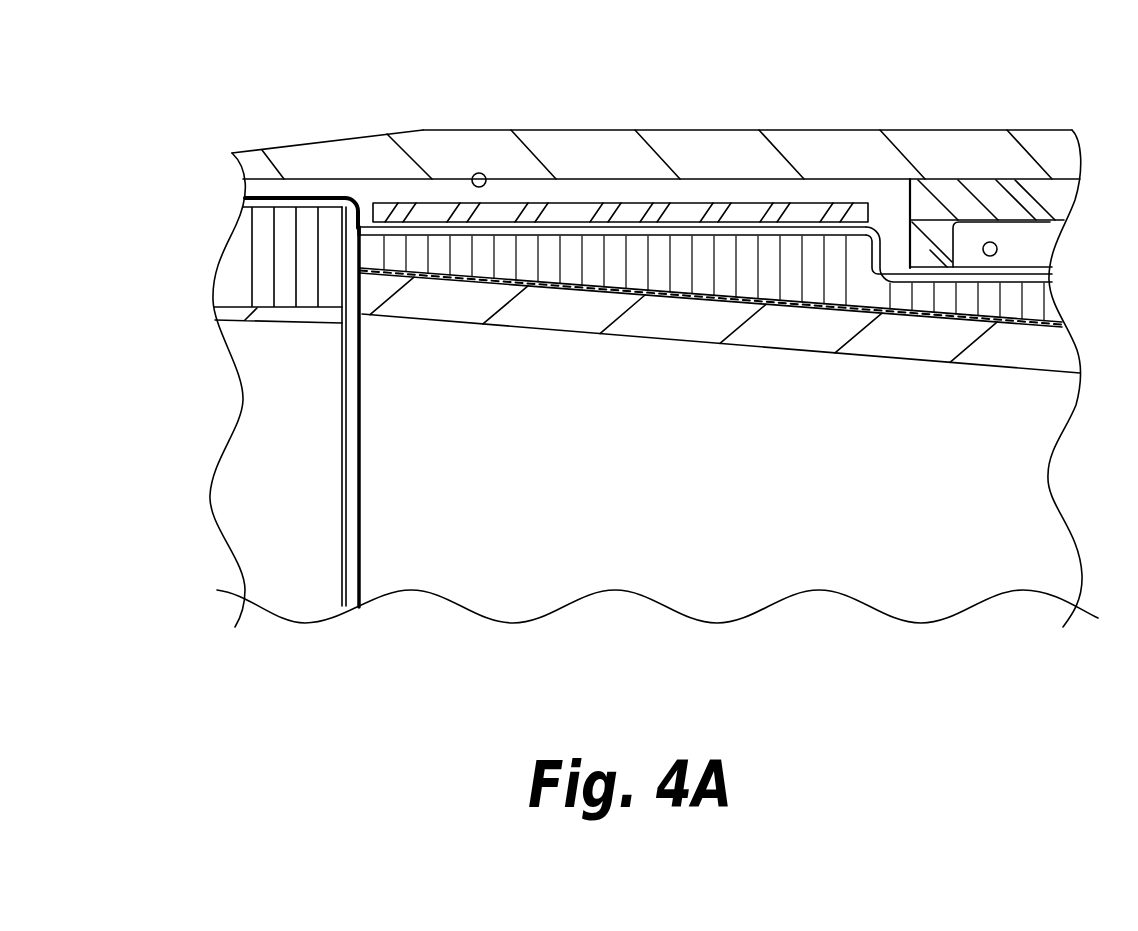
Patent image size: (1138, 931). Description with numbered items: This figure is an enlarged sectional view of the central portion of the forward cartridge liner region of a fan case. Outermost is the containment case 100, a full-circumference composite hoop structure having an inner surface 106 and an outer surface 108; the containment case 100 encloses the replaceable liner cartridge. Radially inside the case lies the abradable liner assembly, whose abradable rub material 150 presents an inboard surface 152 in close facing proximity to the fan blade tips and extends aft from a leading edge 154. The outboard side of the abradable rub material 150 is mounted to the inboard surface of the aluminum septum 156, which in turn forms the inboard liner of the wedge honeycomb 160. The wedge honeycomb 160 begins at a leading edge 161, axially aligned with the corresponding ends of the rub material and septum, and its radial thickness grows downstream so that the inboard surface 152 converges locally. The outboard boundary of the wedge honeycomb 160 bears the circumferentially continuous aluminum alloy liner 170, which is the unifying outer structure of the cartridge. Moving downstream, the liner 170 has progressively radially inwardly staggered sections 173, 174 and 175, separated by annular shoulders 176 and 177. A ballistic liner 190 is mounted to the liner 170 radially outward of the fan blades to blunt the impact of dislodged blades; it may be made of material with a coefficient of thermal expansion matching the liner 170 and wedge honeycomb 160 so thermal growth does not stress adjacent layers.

The containment case 100 is at (742, 140).
The inner surface 106 is at (478, 173).
The outer surface 108 is at (825, 128).
The abradable rub material 150 is at (993, 345).
The inboard surface 152 is at (865, 352).
The leading edge 154 is at (357, 295).
The aluminum septum 156 is at (772, 305).
The wedge honeycomb 160 is at (690, 268).
The leading edge 161 is at (357, 254).
The aluminum alloy liner 170 is at (418, 237).
The first section 173 is at (257, 198).
The second section 174 is at (568, 202).
The third section 175 is at (905, 274).
The annular shoulder 176 is at (364, 212).
The annular shoulder 177 is at (888, 240).
The ballistic liner 190 is at (688, 202).